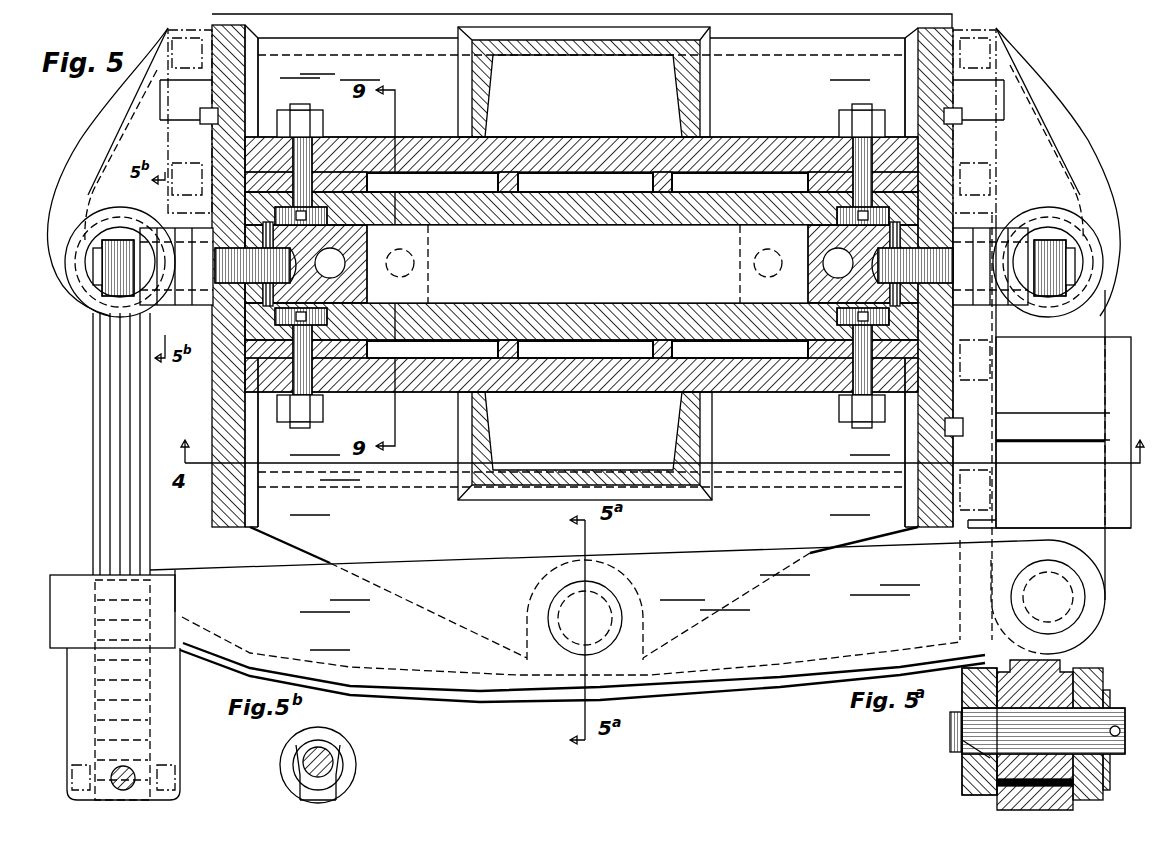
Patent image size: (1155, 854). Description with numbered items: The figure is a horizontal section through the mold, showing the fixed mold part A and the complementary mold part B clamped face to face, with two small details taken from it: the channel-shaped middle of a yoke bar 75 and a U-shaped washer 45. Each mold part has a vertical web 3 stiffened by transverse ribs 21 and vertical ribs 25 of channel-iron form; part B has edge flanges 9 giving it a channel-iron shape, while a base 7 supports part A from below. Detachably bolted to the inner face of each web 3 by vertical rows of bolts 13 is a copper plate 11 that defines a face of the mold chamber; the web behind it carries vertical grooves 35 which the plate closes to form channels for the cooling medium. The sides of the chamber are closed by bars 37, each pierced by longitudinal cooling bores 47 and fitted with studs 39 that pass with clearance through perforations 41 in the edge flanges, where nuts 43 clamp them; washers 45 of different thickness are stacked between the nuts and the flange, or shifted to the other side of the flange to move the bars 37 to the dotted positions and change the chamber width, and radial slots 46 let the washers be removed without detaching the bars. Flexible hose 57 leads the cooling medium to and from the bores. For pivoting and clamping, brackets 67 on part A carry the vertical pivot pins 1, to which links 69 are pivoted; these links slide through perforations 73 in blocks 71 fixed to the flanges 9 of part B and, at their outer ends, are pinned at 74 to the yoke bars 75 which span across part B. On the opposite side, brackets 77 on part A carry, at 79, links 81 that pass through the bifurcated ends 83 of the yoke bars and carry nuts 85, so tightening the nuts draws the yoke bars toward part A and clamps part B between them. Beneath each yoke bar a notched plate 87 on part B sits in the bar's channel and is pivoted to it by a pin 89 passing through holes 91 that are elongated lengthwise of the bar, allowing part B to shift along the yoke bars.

In FIG. 5, the pivot pins 1 is at (1050, 300).
In FIG. 5, the web 3 is at (535, 140).
In FIG. 5, the base 7 is at (580, 42).
In FIG. 5, the edge flanges 9 is at (214, 406).
In FIG. 5, the plate-like member 11 is at (608, 222).
In FIG. 5, the bolts 13 is at (302, 108).
In FIG. 5, the transverse stiffening rib 21 is at (380, 45).
In FIG. 5, the vertical ribs 25 is at (690, 78).
In FIG. 5, the vertical longitudinal grooves 35 is at (418, 169).
In FIG. 5, the bars 37 is at (430, 268).
In FIG. 5, the studs 39 is at (215, 310).
In FIG. 5B, the studs 39 is at (330, 752).
In FIG. 5, the perforations 41 is at (258, 300).
In FIG. 5, the nuts 43 is at (120, 240).
In FIG. 5B, the nuts 43 is at (282, 734).
In FIG. 5, the washers 45 is at (160, 228).
In FIG. 5B, the washers 45 is at (282, 778).
In FIG. 5B, the radial slots 46 is at (342, 778).
In FIG. 5, the longitudinal bores 47 is at (345, 262).
In FIG. 5, the flexible hose 57 is at (92, 118).
In FIG. 5, the brackets 67 is at (1010, 68).
In FIG. 5, the links 69 is at (1103, 300).
In FIG. 5, the blocks 71 is at (1108, 530).
In FIG. 5, the perforations 73 is at (1098, 358).
In FIG. 5, the pins 74 is at (1080, 598).
In FIG. 5, the yoke bars 75 is at (540, 695).
In FIG. 5A, the yoke bars 75 is at (975, 782).
In FIG. 5, the brackets 77 is at (123, 102).
In FIG. 5, the pivot 79 is at (88, 305).
In FIG. 5, the links 81 is at (95, 366).
In FIG. 5, the bifurcated ends 83 is at (66, 580).
In FIG. 5, the nuts 85 is at (170, 723).
In FIG. 5, the plate 87 is at (278, 538).
In FIG. 5A, the plate 87 is at (1060, 670).
In FIG. 5, the pin 89 is at (605, 608).
In FIG. 5A, the pin 89 is at (975, 720).
In FIG. 5, the holes 91 is at (612, 612).
In FIG. 5A, the holes 91 is at (970, 745).
In FIG. 5, the fixed mold part A is at (212, 145).
In FIG. 5, the complementary mold part B is at (212, 378).